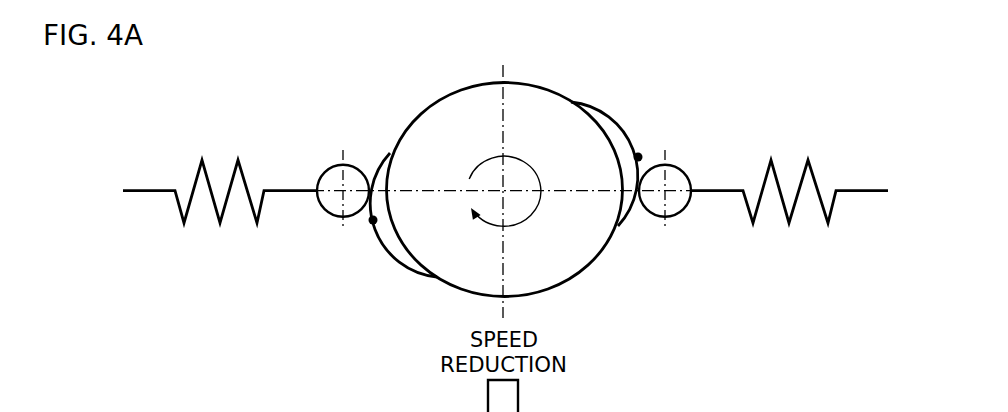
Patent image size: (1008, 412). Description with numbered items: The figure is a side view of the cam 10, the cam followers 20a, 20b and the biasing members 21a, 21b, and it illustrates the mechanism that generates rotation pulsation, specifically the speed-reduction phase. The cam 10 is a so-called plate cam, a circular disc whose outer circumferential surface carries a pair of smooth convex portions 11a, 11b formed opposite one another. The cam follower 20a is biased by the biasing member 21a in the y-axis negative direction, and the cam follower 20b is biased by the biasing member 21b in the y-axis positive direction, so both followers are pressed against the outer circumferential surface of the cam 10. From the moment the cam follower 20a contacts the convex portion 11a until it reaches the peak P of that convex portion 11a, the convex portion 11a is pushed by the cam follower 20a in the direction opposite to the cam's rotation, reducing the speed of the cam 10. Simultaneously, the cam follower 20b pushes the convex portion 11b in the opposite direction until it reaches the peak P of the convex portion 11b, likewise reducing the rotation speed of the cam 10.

The cam 10 is at (520, 88).
The convex portion 11a is at (606, 113).
The convex portion 11b is at (397, 258).
The peak P is at (638, 157).
The cam follower 20a is at (682, 168).
The cam follower 20b is at (337, 167).
The biasing member 21a is at (810, 165).
The biasing member 21b is at (200, 167).